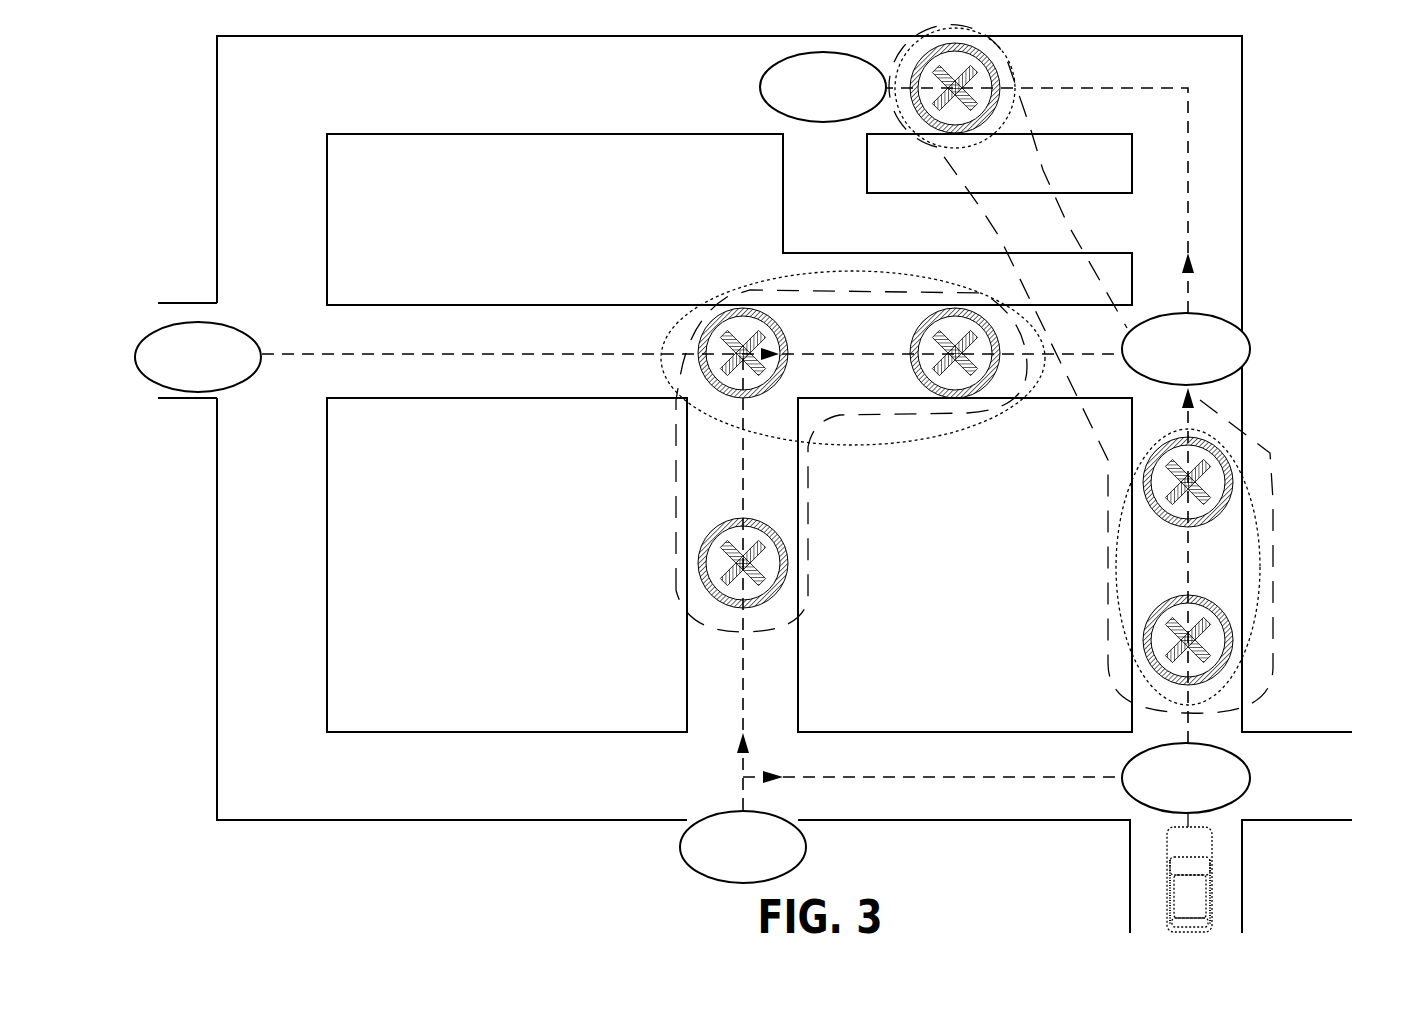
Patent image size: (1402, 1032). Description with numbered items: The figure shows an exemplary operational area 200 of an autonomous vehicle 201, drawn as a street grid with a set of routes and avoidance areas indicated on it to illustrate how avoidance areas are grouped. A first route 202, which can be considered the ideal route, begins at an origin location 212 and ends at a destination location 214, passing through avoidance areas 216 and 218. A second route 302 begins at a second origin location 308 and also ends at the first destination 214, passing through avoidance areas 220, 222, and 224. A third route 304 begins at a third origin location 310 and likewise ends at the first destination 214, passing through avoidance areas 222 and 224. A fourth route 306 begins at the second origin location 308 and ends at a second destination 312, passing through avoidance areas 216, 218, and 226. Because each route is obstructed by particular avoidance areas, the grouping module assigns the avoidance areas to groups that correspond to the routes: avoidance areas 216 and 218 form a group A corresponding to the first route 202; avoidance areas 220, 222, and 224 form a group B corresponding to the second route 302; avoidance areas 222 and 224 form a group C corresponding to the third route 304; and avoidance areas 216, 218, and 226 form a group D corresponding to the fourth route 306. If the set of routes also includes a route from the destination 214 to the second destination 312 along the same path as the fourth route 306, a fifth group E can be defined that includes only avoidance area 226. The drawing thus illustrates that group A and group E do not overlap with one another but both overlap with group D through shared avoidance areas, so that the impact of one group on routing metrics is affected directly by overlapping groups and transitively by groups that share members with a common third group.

The operational area 200 is at (1302, 160).
The autonomous vehicle 201 is at (1210, 892).
The first route 202 is at (1190, 563).
The origin location 212 is at (1238, 765).
The destination location 214 is at (1228, 330).
The avoidance area 216 is at (1147, 630).
The avoidance area 218 is at (1147, 480).
The avoidance area 220 is at (700, 543).
The avoidance area 222 is at (730, 312).
The avoidance area 224 is at (970, 395).
The avoidance area 226 is at (936, 48).
The second route 302 is at (738, 668).
The third route 304 is at (426, 352).
The fourth route 306 is at (880, 775).
The second origin location 308 is at (718, 812).
The third origin location 310 is at (232, 327).
The second destination 312 is at (760, 85).
The group A is at (1248, 497).
The group B is at (677, 458).
The group C is at (855, 447).
The group D is at (1050, 185).
The group E is at (926, 140).